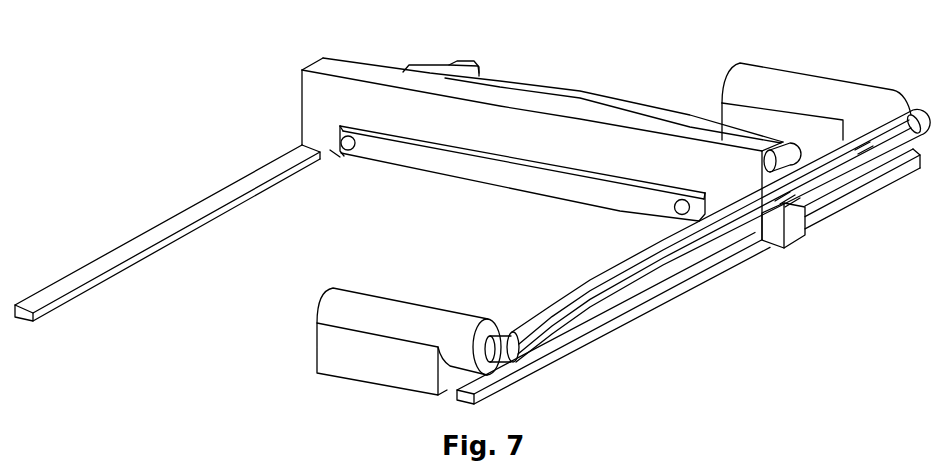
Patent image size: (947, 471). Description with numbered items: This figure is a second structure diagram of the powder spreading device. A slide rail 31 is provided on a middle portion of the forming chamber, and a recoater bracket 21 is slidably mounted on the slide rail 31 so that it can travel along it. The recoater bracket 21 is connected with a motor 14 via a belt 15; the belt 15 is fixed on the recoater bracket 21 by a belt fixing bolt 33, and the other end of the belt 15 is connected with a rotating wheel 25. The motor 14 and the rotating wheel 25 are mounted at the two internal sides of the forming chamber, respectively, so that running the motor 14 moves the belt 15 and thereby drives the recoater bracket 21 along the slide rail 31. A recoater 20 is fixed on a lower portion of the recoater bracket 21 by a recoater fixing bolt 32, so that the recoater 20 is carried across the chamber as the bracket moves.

The motor 14 is at (348, 308).
The belt 15 is at (560, 305).
The recoater 20 is at (452, 172).
The recoater bracket 21 is at (347, 72).
The rotating wheel 25 is at (778, 78).
The slide rail 31 is at (148, 240).
The recoater fixing bolt 32 is at (338, 162).
The belt fixing bolt 33 is at (812, 203).